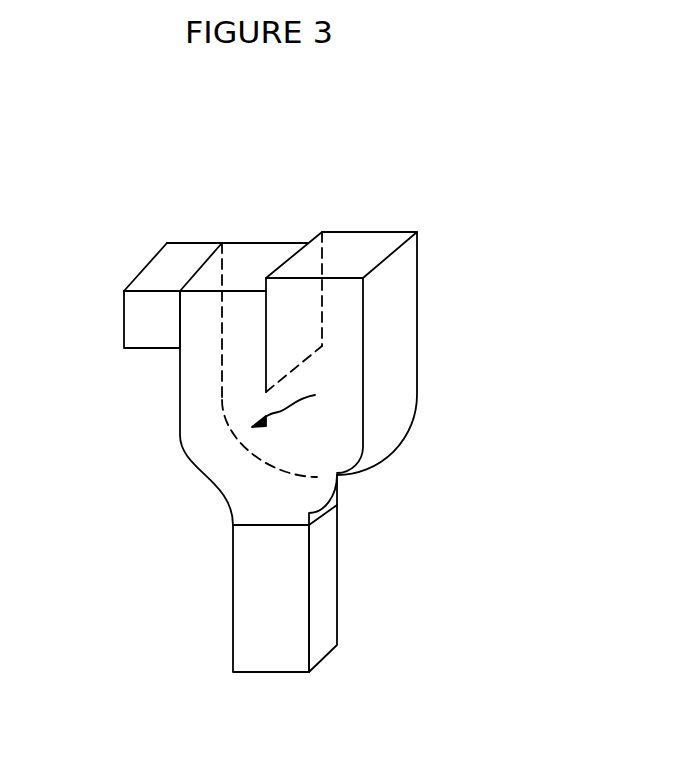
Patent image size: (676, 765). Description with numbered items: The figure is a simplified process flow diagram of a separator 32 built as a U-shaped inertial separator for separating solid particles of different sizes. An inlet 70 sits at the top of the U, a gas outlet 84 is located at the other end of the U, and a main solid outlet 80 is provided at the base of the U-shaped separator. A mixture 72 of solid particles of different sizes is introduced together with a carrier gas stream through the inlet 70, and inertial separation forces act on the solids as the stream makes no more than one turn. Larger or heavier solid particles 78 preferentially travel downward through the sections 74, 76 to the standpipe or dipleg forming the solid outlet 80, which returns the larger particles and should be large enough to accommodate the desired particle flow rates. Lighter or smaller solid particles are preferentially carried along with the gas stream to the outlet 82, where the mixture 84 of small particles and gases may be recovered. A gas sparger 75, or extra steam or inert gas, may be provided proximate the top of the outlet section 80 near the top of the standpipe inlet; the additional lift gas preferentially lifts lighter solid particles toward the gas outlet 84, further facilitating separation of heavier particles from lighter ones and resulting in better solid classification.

The separator 32 is at (482, 417).
The inlet 70 is at (382, 240).
The mixture 72 is at (362, 218).
The section 74 is at (377, 463).
The gas sparger 75 is at (315, 535).
The section 76 is at (222, 462).
The larger or heavier solid particles 78 is at (270, 610).
The main solid outlet 80 is at (278, 667).
The outlet 82 is at (140, 273).
The gas outlet 84 is at (115, 312).